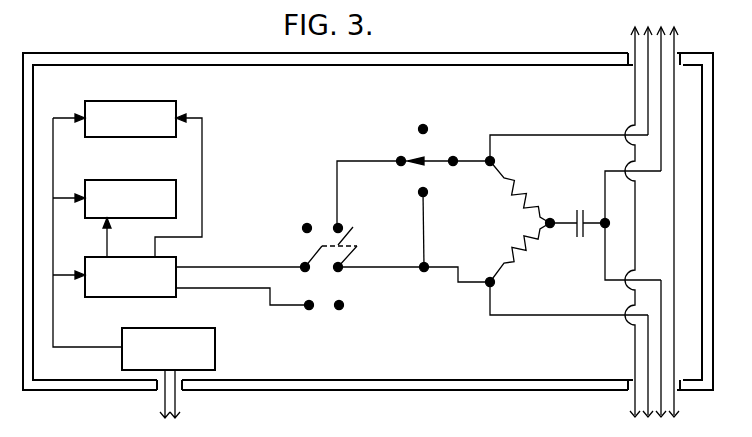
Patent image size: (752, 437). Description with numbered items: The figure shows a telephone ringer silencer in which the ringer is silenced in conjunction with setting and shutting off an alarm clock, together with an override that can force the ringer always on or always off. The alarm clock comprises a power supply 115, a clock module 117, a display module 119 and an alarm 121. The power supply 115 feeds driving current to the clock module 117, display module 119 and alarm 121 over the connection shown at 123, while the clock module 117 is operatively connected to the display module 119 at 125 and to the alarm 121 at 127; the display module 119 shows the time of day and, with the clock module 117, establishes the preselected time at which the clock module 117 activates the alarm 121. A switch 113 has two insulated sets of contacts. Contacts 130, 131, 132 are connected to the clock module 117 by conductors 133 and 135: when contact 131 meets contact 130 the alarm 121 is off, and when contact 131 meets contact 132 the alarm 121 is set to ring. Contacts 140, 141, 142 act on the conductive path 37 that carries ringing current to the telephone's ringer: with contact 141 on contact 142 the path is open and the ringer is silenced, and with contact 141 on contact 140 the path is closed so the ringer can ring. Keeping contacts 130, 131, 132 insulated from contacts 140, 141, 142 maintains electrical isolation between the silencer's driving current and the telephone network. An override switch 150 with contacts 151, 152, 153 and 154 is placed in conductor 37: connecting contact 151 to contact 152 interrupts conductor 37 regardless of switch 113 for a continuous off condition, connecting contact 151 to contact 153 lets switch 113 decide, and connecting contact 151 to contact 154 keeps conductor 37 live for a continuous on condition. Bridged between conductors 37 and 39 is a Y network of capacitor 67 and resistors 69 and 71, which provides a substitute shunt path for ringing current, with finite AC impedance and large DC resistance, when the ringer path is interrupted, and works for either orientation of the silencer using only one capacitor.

The conductor 37 is at (583, 133).
The conductor 39 is at (604, 180).
The capacitor 67 is at (580, 238).
The resistor 69 is at (533, 190).
The resistor 71 is at (521, 263).
The switch 113 is at (331, 250).
The power supply 115 is at (216, 352).
The clock module 117 is at (107, 297).
The display module 119 is at (144, 179).
The alarm 121 is at (162, 101).
The connection from power supply 123 is at (53, 128).
The connection between clock module and display module 125 is at (106, 240).
The connection between clock module and alarm 127 is at (203, 173).
The contact 130 is at (303, 225).
The contact 131 is at (300, 263).
The contact 132 is at (306, 309).
The conductor 133 is at (209, 266).
The conductor 135 is at (222, 289).
The contact 140 is at (342, 223).
The contact 141 is at (341, 271).
The contact 142 is at (343, 308).
The override switch 150 is at (390, 116).
The contact 151 is at (455, 157).
The contact 152 is at (424, 123).
The contact 153 is at (398, 156).
The contact 154 is at (429, 192).